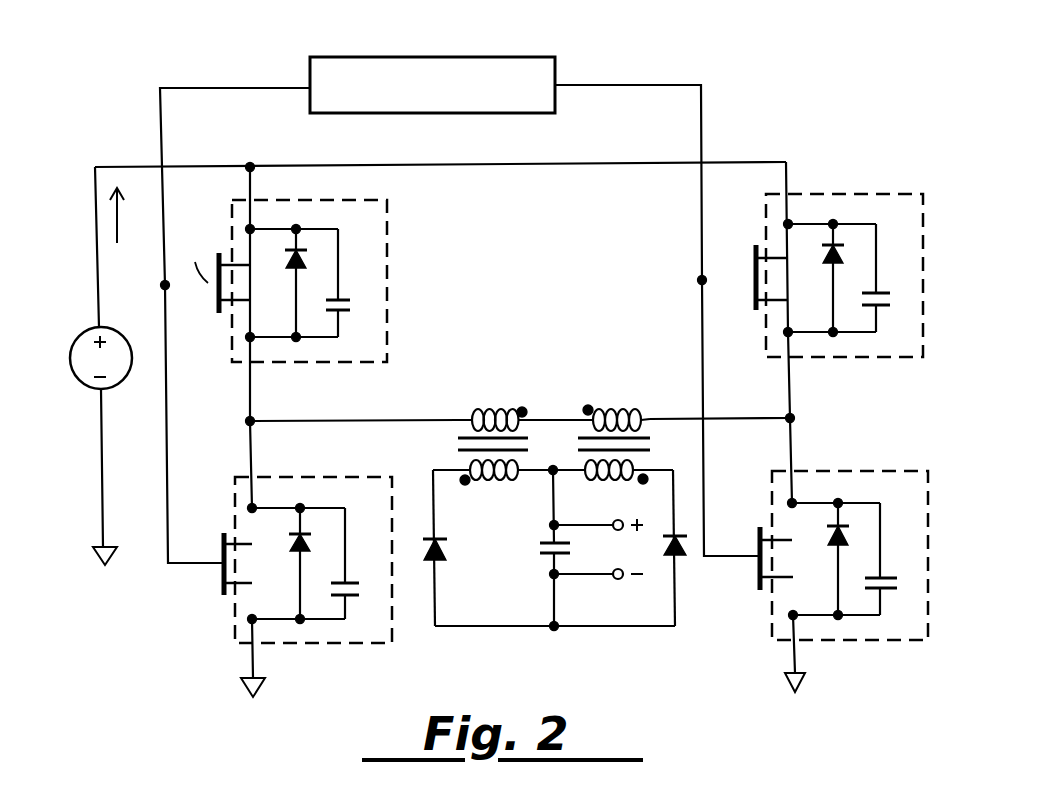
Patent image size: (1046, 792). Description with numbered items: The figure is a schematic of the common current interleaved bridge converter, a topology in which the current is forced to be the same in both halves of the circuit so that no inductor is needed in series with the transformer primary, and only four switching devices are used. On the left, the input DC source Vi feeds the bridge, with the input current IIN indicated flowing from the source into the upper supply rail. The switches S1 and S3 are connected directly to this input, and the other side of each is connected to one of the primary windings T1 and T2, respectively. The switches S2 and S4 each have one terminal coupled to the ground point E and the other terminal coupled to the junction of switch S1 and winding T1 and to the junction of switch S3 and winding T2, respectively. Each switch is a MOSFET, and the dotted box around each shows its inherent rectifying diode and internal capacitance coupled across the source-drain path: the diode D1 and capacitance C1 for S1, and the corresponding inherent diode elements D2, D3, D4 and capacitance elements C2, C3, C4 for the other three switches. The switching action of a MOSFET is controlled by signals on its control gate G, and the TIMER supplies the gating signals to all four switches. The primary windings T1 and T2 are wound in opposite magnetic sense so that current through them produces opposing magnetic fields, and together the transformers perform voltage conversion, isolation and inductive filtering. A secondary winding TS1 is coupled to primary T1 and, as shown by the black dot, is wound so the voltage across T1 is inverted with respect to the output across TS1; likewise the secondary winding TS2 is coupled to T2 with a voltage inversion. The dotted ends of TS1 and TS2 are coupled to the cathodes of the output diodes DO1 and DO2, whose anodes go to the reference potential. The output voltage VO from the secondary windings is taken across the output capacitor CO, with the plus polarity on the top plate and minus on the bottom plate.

The timer TIMER is at (460, 310).
The input DC source Vi is at (87, 366).
The input current IIN is at (115, 232).
The control gate G is at (197, 262).
The ground point E is at (267, 687).
The switching path S1 is at (303, 281).
The switch S2 is at (308, 560).
The switch S3 is at (839, 275).
The switch S4 is at (844, 555).
The diode D1 is at (303, 283).
The inherent diode element D2 is at (307, 564).
The inherent diode element D3 is at (842, 278).
The inherent diode element D4 is at (846, 559).
The capacitance C1 is at (349, 283).
The inherent capacitance element C2 is at (353, 563).
The inherent capacitance element C3 is at (885, 278).
The inherent capacitance element C4 is at (889, 559).
The primary winding T1 is at (493, 416).
The primary winding T2 is at (614, 415).
The secondary winding TS1 is at (493, 482).
The secondary winding TS2 is at (613, 481).
The first output diode DO1 is at (452, 548).
The second output diode DO2 is at (687, 548).
The output capacitor CO is at (539, 548).
The output voltage VO is at (597, 549).